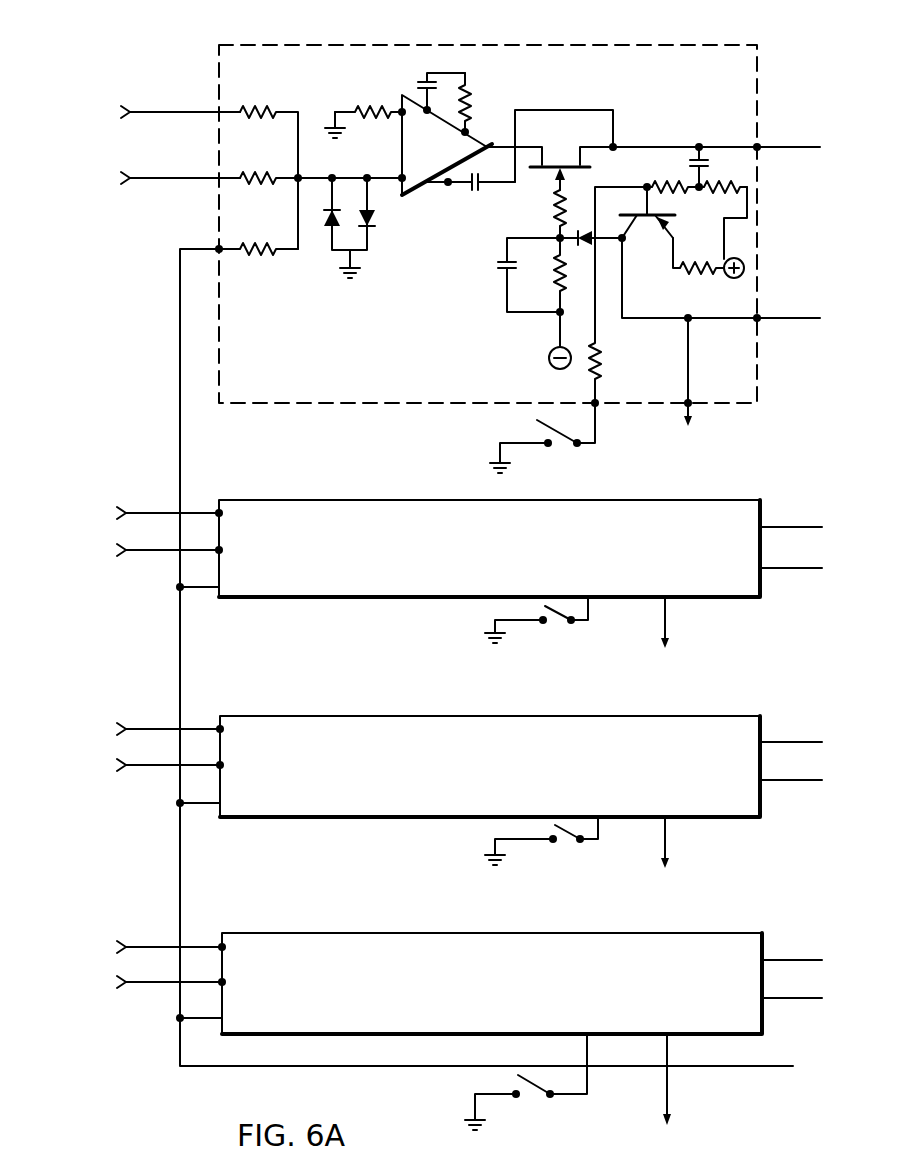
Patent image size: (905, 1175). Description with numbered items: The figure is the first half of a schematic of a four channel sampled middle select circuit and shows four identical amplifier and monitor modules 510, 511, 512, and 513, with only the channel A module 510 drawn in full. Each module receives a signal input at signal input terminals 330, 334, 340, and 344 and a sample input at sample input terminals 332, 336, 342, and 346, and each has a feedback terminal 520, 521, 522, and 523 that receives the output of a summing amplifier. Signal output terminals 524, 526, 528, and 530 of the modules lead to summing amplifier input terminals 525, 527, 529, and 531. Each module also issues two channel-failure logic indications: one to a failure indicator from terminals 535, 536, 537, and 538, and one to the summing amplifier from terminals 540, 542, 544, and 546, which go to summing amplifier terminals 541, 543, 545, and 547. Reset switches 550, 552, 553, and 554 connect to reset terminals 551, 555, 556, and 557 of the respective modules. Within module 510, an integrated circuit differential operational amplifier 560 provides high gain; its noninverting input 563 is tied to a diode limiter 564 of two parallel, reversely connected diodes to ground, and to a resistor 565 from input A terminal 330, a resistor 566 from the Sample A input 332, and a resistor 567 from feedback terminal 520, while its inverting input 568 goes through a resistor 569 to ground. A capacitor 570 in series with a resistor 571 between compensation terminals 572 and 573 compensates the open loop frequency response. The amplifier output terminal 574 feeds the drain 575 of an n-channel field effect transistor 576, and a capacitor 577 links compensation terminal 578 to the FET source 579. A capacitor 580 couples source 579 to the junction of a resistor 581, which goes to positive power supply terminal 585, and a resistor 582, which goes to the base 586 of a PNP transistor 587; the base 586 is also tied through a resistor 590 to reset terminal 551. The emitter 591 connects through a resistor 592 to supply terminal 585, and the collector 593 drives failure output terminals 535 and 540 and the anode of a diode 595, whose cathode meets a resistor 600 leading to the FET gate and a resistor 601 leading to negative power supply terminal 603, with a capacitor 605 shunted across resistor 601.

The input A terminal 330 is at (131, 112).
The Sample A input 332 is at (131, 178).
The signal input terminal 334 is at (124, 512).
The sample input terminal 336 is at (124, 549).
The signal input terminal 340 is at (124, 728).
The sample input terminal 342 is at (124, 764).
The signal input terminal 344 is at (124, 946).
The sample input terminal 346 is at (124, 981).
The amplifier and monitor module 510 is at (712, 45).
The amplifier and monitor module 511 is at (686, 500).
The amplifier and monitor module 512 is at (686, 716).
The amplifier and monitor module 513 is at (686, 933).
The feedback terminal 520 is at (219, 248).
The feedback terminal 521 is at (178, 588).
The feedback terminal 522 is at (179, 805).
The feedback terminal 523 is at (179, 1020).
The signal output terminal 524 is at (758, 146).
The summing amplifier input terminal 525 is at (830, 148).
The signal output terminal 526 is at (762, 526).
The summing amplifier terminal 527 is at (844, 526).
The signal output terminal 528 is at (762, 741).
The summing amplifier input terminal 529 is at (836, 743).
The signal output terminal 530 is at (764, 959).
The summing amplifier input terminal 531 is at (840, 962).
The terminal 535 is at (690, 410).
The terminal 536 is at (667, 605).
The terminal 537 is at (667, 825).
The terminal 538 is at (669, 1040).
The terminal 540 is at (757, 317).
The summing amplifier terminal 541 is at (830, 322).
The terminal 542 is at (762, 567).
The summing amplifier terminal 543 is at (844, 567).
The terminal 544 is at (762, 779).
The summing amplifier terminal 545 is at (840, 785).
The terminal 546 is at (764, 997).
The summing amplifier terminal 547 is at (840, 1004).
The switch 550 is at (540, 422).
The module terminal 551 is at (597, 407).
The switch 552 is at (547, 614).
The switch 553 is at (556, 832).
The switch 554 is at (533, 1080).
The terminal 555 is at (590, 600).
The terminal 556 is at (600, 820).
The terminal 557 is at (589, 1037).
The operational amplifier 560 is at (444, 169).
The noninverting input 563 is at (399, 176).
The diode limiter 564 is at (360, 207).
The resistor 565 is at (280, 108).
The resistor 566 is at (280, 174).
The resistor 567 is at (280, 242).
The inverting input 568 is at (398, 110).
The resistor 569 is at (355, 108).
The capacitor 570 is at (429, 74).
The resistor 571 is at (470, 97).
The compensation terminal 572 is at (428, 111).
The compensation terminal 573 is at (465, 125).
The output terminal 574 is at (466, 133).
The drain 575 is at (518, 145).
The field effect transistor 576 is at (571, 158).
The capacitor 577 is at (478, 188).
The compensation terminal 578 is at (448, 186).
The source 579 is at (614, 146).
The capacitor 580 is at (710, 168).
The resistor 581 is at (738, 184).
The resistor 582 is at (672, 186).
The positive power supply terminal 585 is at (745, 264).
The base 586 is at (646, 204).
The PNP transistor 587 is at (656, 248).
The resistor 590 is at (599, 356).
The emitter 591 is at (668, 226).
The resistor 592 is at (692, 262).
The collector 593 is at (618, 243).
The diode 595 is at (588, 246).
The resistor 600 is at (556, 208).
The resistor 601 is at (555, 280).
The negative power supply terminal 603 is at (550, 358).
The capacitor 605 is at (505, 268).